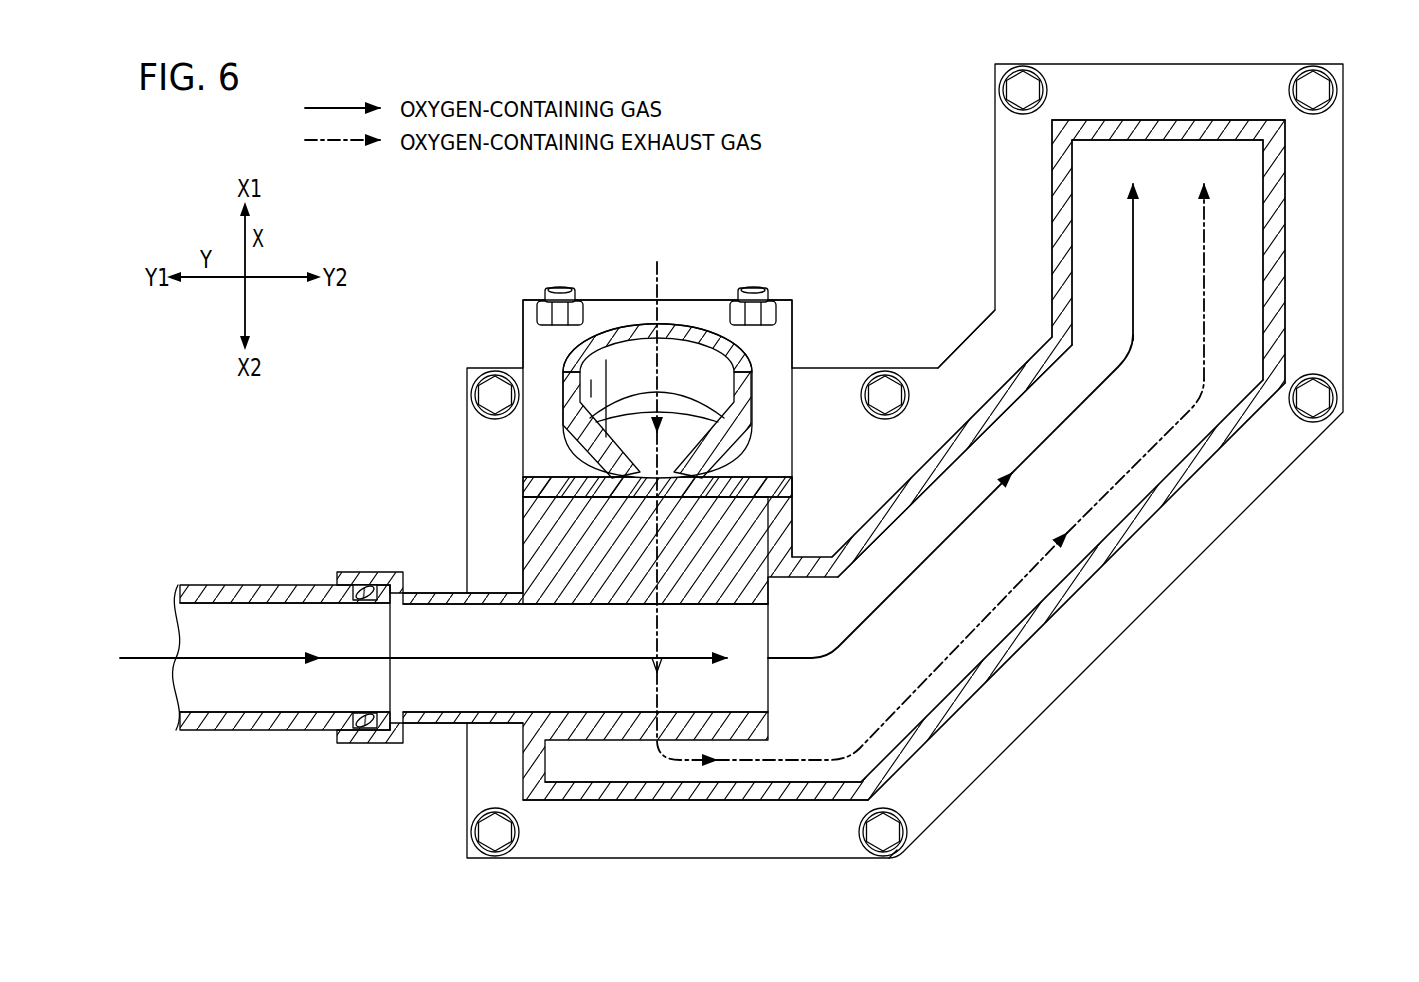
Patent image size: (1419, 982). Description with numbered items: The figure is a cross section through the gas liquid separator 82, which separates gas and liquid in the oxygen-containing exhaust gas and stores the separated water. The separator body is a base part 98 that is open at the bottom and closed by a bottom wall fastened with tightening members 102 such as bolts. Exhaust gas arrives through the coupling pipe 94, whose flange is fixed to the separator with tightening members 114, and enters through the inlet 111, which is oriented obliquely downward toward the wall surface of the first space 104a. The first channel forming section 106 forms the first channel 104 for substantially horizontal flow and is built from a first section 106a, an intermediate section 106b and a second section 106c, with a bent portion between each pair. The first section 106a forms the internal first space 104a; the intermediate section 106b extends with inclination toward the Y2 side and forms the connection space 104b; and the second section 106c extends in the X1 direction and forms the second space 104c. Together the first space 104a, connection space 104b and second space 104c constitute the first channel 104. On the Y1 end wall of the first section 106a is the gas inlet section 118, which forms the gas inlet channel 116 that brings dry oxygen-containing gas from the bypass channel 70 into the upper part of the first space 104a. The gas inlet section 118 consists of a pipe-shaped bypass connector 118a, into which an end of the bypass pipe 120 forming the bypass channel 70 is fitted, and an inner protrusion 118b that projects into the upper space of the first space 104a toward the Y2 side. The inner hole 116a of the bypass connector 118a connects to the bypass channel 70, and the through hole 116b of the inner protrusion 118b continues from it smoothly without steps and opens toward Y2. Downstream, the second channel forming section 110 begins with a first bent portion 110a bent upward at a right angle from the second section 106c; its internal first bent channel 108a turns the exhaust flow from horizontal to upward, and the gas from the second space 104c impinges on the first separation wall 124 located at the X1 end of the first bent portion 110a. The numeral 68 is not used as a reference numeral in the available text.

The gas liquid separator 82 is at (528, 228).
The tightening members 114 is at (556, 287).
The coupling pipe 94 is at (578, 396).
The exhaust gas pipe 68 is at (572, 360).
The inlet 111 is at (680, 452).
The second channel forming section 110 is at (870, 461).
The first bent portion 110a is at (1127, 128).
The gas inlet channel 116 is at (556, 596).
The inner hole 116a is at (422, 637).
The through hole 116b is at (560, 637).
The bypass pipe 120 is at (232, 593).
The bypass channel 70 is at (273, 627).
The gas inlet section 118 is at (460, 705).
The bypass connector 118a is at (364, 692).
The inner protrusion 118b is at (583, 707).
The tightening members 102 is at (502, 834).
The base part 98 is at (635, 797).
The first channel 104 is at (961, 366).
The first space 104a is at (813, 613).
The connection space 104b is at (992, 465).
The second space 104c is at (1110, 317).
The first channel forming section 106 is at (1087, 491).
The first section 106a is at (907, 823).
The intermediate section 106b is at (1133, 527).
The second section 106c is at (1287, 313).
The first separation wall 124 is at (1218, 140).
The first bent channel 108a is at (1240, 183).